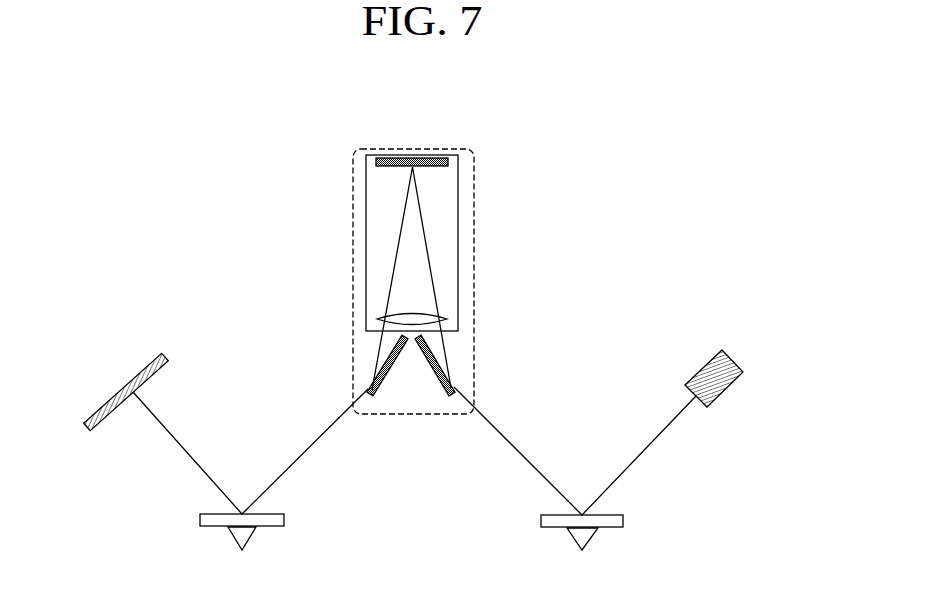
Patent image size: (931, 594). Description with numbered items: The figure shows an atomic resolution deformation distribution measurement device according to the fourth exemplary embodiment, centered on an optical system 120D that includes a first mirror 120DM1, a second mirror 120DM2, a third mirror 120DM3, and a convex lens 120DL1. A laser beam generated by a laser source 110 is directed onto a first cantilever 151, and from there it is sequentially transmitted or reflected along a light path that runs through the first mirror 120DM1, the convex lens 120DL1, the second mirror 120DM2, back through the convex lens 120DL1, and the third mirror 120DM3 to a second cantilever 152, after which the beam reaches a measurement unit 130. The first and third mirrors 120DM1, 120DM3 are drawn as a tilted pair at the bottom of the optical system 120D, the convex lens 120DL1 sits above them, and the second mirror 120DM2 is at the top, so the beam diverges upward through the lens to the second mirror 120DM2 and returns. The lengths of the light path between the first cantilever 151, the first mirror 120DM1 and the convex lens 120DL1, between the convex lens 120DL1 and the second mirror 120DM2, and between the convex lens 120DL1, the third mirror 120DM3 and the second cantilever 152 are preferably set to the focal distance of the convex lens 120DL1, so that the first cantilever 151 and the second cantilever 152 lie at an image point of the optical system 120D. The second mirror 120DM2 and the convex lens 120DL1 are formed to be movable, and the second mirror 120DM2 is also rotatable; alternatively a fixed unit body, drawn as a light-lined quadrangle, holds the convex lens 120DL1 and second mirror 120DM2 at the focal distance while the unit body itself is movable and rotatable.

The laser source 110 is at (733, 362).
The measurement unit 130 is at (124, 384).
The first cantilever 151 is at (584, 533).
The second cantilever 152 is at (241, 534).
The optical system 120D is at (475, 198).
The first mirror 120DM1 is at (455, 386).
The second mirror 120DM2 is at (432, 158).
The third mirror 120DM3 is at (367, 394).
The convex lens 120DL1 is at (438, 316).